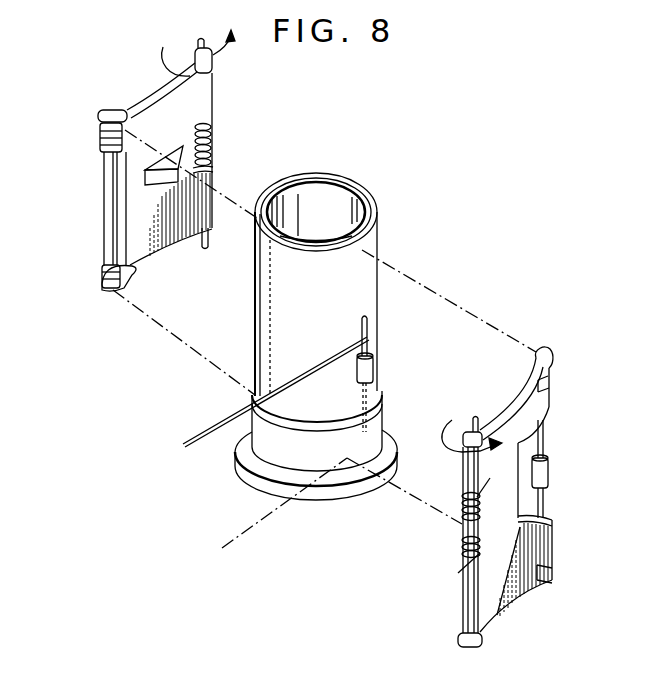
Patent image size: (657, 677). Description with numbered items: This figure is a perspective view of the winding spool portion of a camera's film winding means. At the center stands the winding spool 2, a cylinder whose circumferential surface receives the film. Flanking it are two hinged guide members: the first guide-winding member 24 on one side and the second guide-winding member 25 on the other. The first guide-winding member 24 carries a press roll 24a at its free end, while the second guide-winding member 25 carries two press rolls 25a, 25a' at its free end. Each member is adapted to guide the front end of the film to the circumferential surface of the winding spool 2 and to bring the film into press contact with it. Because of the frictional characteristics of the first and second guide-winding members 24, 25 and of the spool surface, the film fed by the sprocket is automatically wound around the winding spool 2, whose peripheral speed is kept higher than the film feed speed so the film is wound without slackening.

The winding spool 2 is at (372, 238).
The first guide-winding member 24 is at (522, 592).
The press roll 24a is at (373, 368).
The second guide-winding member 25 is at (150, 97).
The press roll 25a is at (81, 139).
The press roll 25a' is at (79, 277).